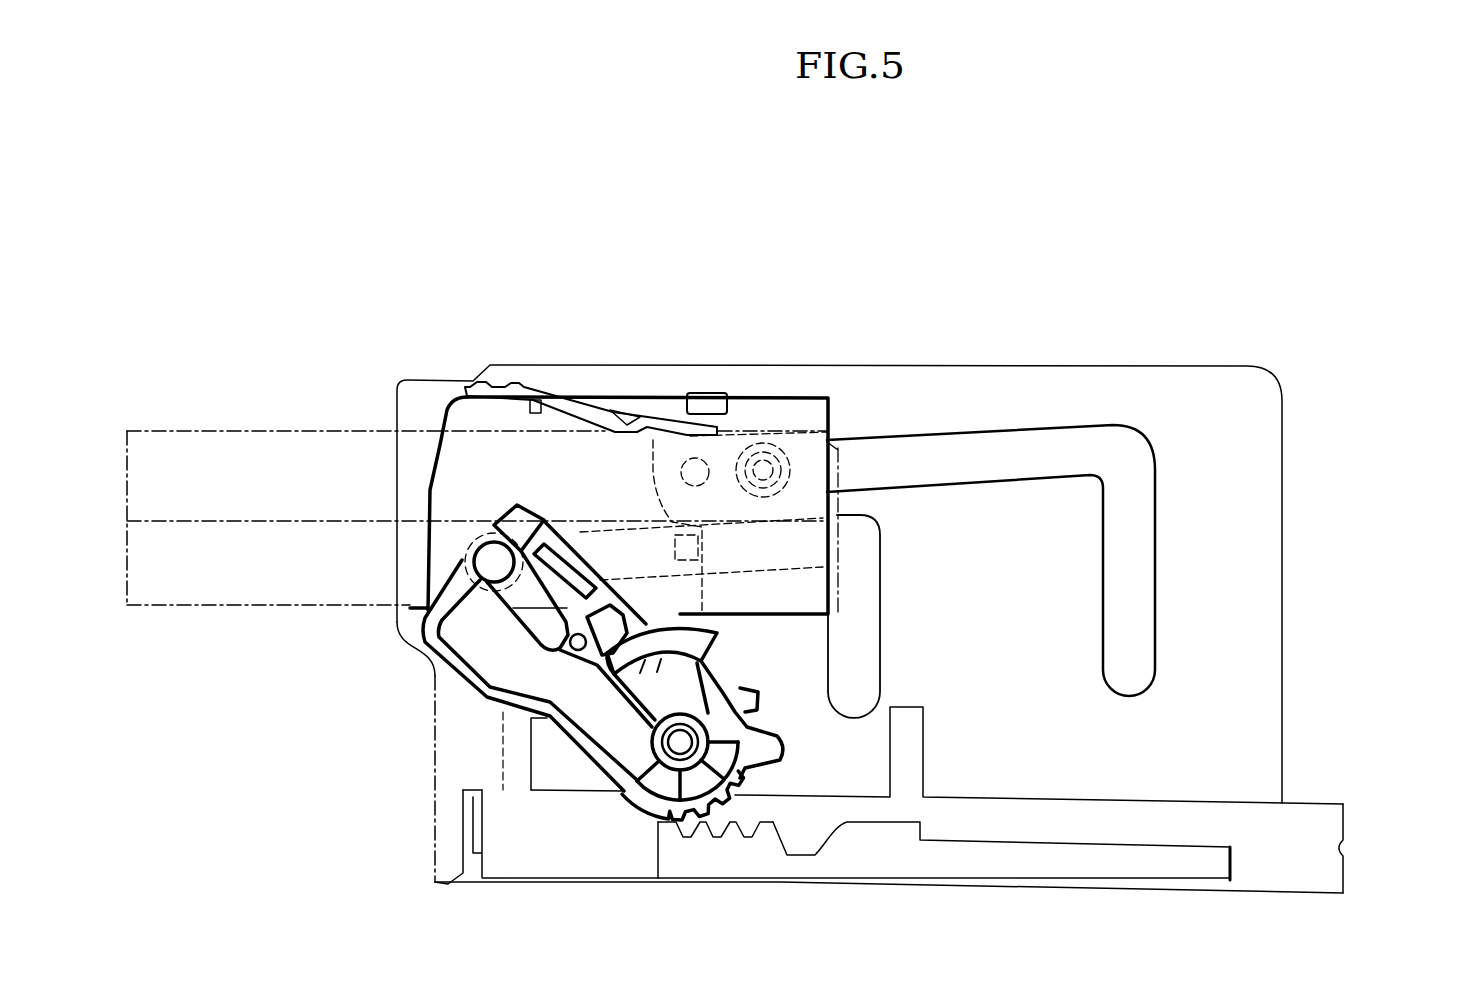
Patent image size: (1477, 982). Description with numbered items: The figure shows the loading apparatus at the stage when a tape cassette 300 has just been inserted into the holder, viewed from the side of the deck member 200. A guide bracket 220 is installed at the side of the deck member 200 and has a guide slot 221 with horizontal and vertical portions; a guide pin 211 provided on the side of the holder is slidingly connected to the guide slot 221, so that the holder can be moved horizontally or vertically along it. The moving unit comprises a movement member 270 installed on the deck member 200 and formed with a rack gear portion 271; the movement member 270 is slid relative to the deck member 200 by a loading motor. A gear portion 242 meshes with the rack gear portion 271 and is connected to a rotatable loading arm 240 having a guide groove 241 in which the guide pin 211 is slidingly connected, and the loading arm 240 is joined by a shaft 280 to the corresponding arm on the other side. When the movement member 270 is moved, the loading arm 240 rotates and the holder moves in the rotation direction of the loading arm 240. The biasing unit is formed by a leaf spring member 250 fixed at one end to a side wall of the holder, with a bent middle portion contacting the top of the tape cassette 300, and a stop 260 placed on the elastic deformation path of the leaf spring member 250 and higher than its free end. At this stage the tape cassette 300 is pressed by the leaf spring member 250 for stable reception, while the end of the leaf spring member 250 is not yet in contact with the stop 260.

The deck member 200 is at (1343, 847).
The guide pin 211 is at (460, 555).
The guide bracket 220 is at (1250, 370).
The guide slot 221 is at (1094, 437).
The loading arm 240 is at (424, 640).
The guide groove 241 is at (522, 626).
The gear portion 242 is at (747, 795).
The leaf spring member 250 is at (556, 395).
The stop 260 is at (704, 393).
The movement member 270 is at (1057, 857).
The rack gear portion 271 is at (668, 822).
The shaft 280 is at (688, 743).
The tape cassette 300 is at (196, 426).